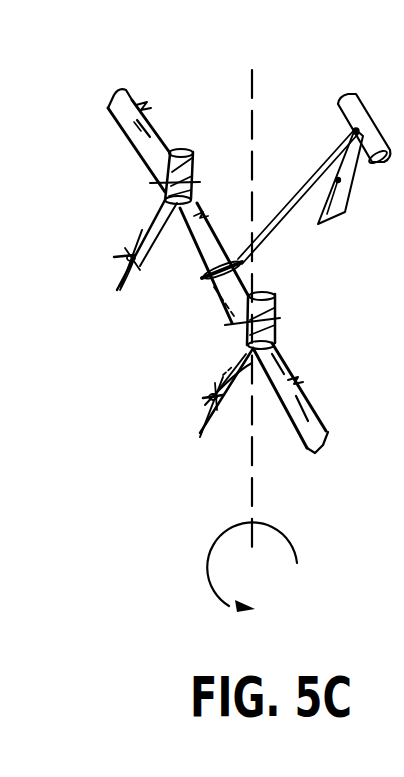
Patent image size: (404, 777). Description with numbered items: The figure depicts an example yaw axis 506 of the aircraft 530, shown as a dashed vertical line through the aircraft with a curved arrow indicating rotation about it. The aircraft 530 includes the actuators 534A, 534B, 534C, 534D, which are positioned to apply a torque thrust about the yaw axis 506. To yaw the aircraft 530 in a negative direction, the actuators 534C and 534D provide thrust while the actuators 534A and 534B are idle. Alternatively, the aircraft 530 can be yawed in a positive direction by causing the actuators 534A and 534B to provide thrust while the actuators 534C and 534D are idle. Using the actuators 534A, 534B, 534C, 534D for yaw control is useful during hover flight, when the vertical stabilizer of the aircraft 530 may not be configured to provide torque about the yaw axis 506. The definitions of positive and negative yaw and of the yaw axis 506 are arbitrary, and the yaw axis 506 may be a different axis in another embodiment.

The yaw axis 506 is at (258, 102).
The aircraft 530 is at (200, 152).
The actuator 534A is at (273, 323).
The actuator 534B is at (213, 396).
The actuator 534C is at (188, 187).
The actuator 534D is at (135, 265).